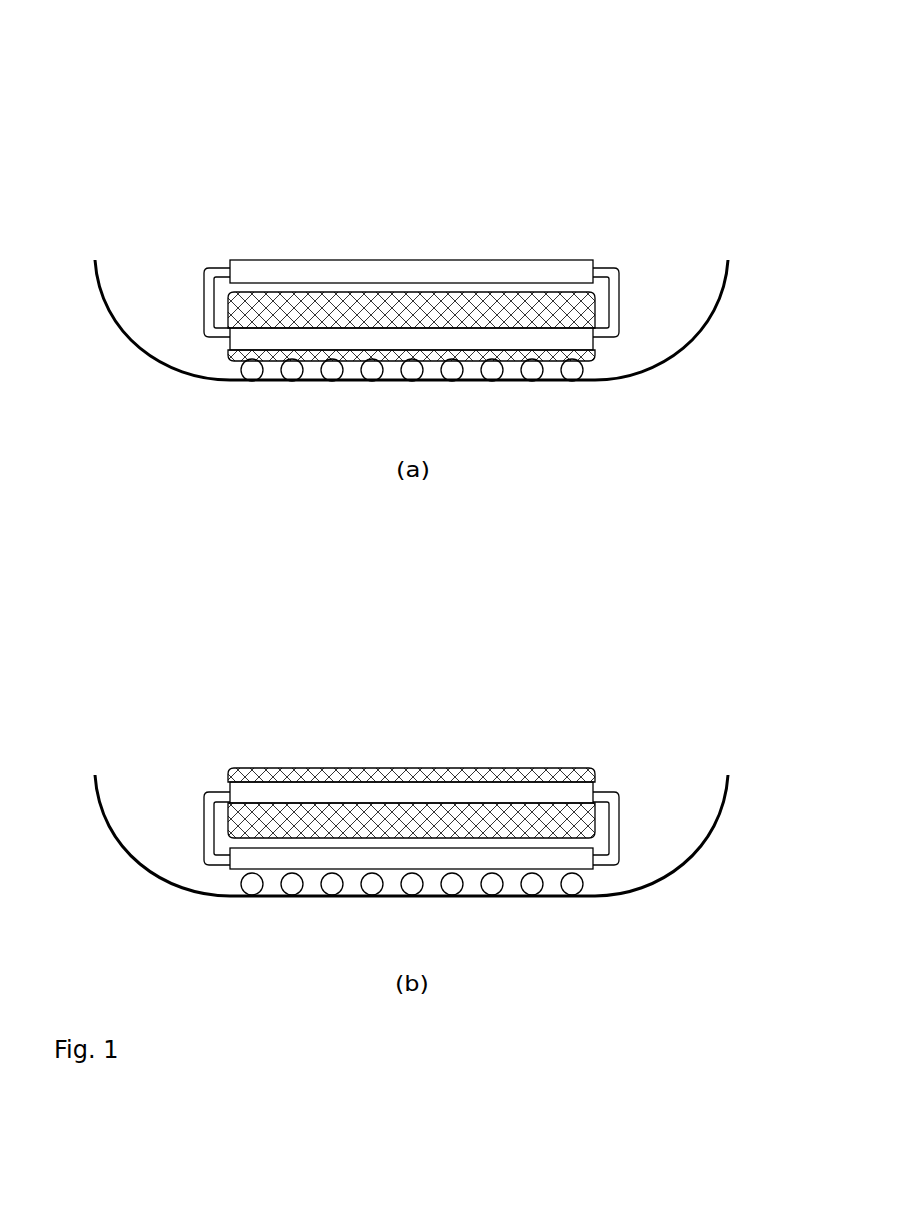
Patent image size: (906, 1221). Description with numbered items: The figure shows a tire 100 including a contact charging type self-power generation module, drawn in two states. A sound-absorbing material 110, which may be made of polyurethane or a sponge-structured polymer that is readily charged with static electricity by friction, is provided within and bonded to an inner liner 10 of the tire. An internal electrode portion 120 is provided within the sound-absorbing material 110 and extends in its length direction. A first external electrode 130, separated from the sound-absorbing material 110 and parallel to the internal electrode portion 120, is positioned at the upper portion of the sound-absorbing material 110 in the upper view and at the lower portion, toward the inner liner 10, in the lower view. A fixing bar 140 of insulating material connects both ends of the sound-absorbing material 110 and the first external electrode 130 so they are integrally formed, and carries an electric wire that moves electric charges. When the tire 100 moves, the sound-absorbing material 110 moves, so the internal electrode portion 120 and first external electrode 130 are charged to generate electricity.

The inner liner 10 is at (706, 331).
The tire 100 is at (617, 101).
The sound-absorbing material 110 is at (238, 302).
The internal electrode portion 120 is at (237, 343).
The first external electrode 130 is at (440, 270).
The fixing bar 140 is at (213, 270).